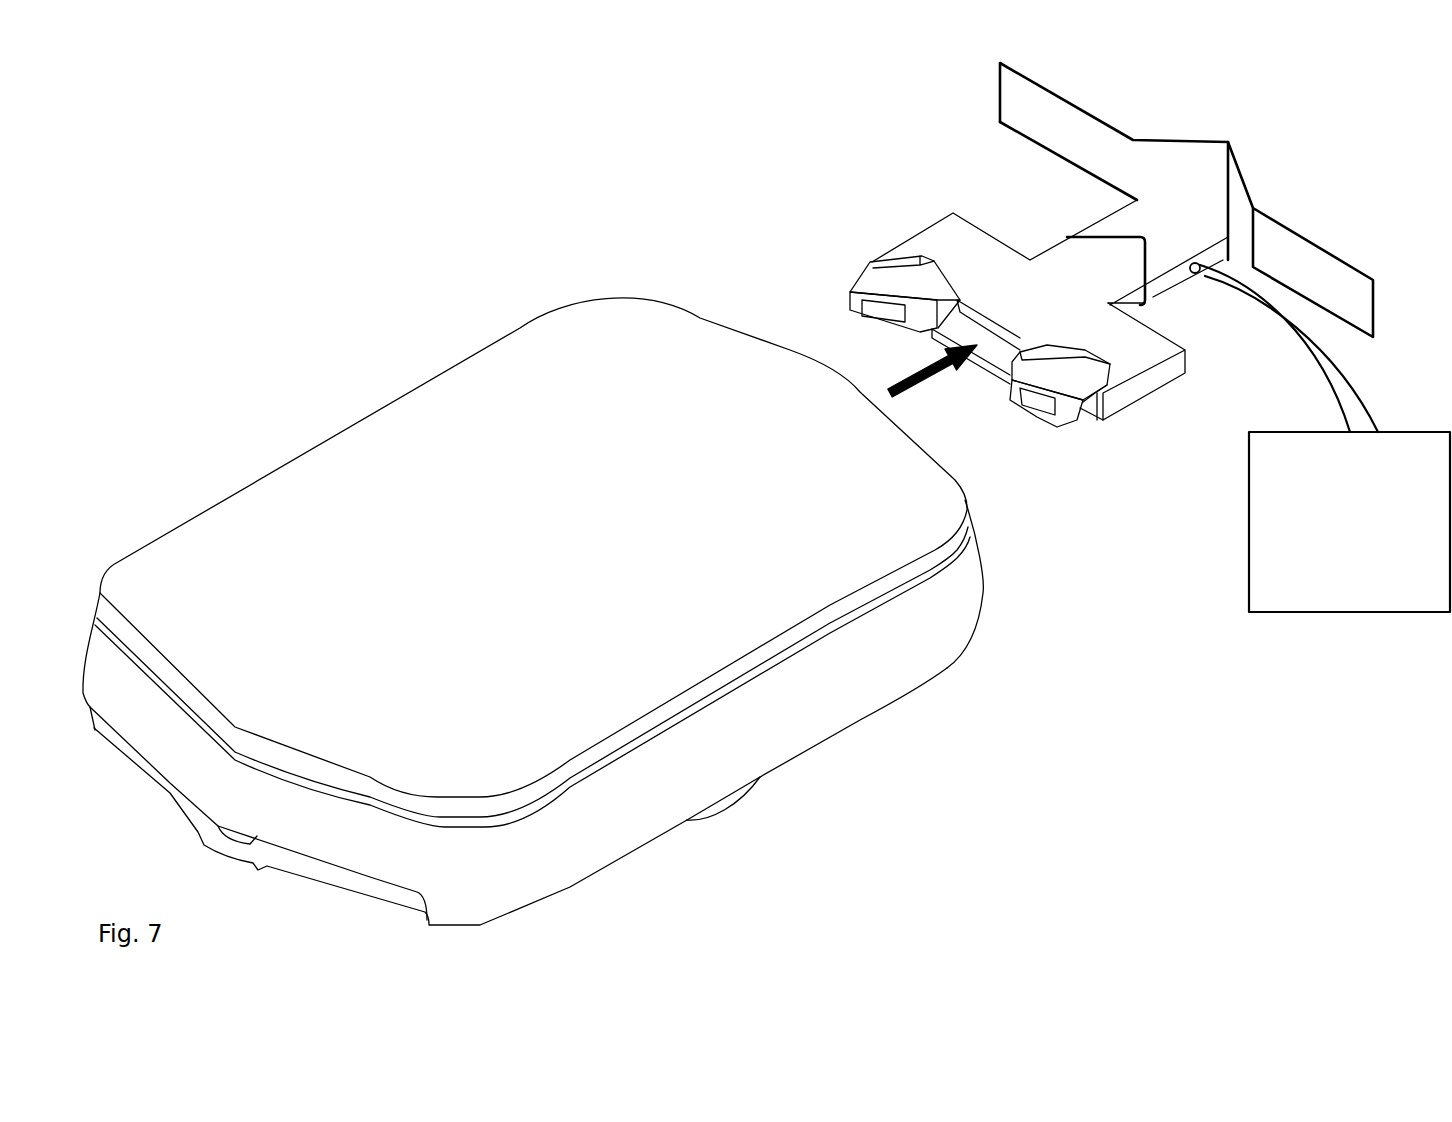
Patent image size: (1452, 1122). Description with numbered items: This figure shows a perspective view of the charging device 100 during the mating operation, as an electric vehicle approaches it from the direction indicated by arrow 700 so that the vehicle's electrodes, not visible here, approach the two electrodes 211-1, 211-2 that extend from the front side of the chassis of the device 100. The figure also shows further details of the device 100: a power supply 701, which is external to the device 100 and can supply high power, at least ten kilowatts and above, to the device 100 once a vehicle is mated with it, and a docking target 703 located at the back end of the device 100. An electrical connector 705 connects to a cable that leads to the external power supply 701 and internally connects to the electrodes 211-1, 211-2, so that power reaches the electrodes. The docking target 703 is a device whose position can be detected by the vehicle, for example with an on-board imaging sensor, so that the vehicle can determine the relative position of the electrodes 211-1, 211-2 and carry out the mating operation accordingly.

The device 100 is at (913, 185).
The electrode 211-1 is at (1057, 383).
The electrode 211-2 is at (888, 290).
The arrow 700 is at (907, 387).
The power supply 701 is at (1349, 522).
The docking target 703 is at (1107, 120).
The electrical connector 705 is at (1192, 278).